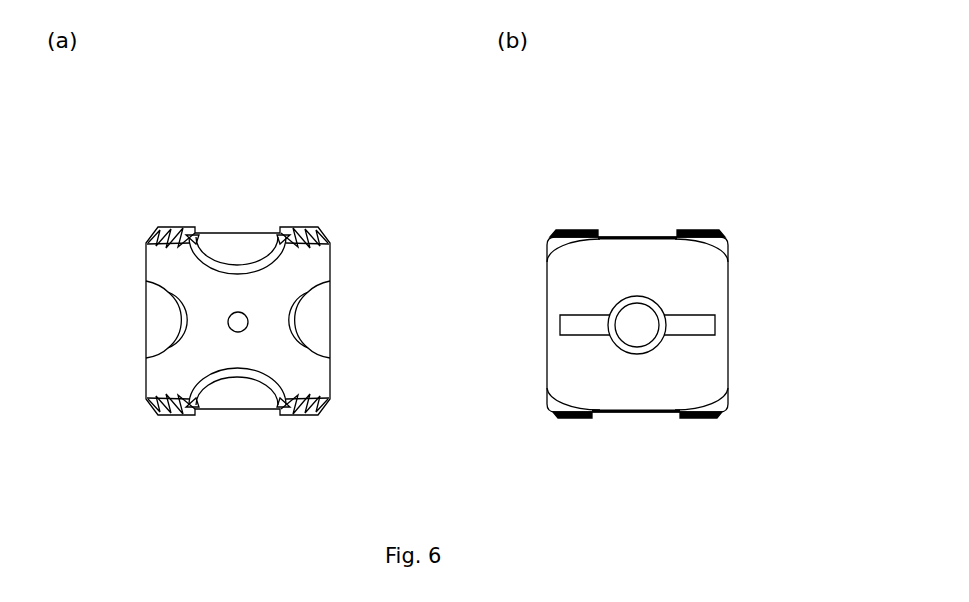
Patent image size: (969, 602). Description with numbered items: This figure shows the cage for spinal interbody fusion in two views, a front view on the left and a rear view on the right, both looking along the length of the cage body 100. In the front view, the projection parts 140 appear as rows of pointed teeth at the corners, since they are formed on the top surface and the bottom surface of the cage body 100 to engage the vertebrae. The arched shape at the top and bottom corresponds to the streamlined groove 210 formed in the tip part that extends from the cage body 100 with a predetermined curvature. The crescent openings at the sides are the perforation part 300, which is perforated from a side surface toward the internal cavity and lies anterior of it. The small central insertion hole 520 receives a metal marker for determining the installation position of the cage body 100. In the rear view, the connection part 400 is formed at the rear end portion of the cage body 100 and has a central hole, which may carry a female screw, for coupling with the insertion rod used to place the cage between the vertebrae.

The cage body 100 is at (290, 199).
The projection parts 140 is at (180, 228).
The streamlined groove 210 is at (222, 232).
The perforation part 300 is at (182, 317).
The insertion hole 520 is at (240, 322).
The connection part 400 is at (706, 290).